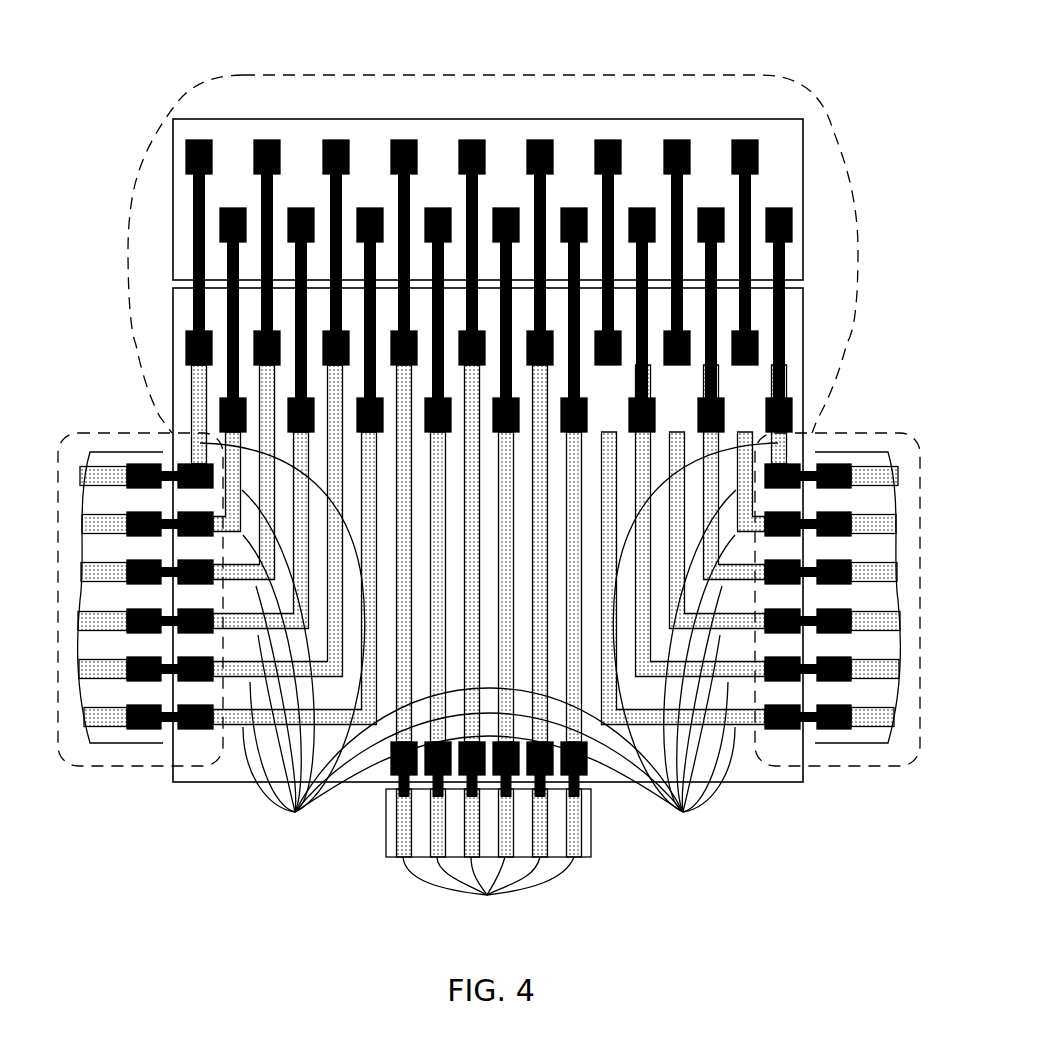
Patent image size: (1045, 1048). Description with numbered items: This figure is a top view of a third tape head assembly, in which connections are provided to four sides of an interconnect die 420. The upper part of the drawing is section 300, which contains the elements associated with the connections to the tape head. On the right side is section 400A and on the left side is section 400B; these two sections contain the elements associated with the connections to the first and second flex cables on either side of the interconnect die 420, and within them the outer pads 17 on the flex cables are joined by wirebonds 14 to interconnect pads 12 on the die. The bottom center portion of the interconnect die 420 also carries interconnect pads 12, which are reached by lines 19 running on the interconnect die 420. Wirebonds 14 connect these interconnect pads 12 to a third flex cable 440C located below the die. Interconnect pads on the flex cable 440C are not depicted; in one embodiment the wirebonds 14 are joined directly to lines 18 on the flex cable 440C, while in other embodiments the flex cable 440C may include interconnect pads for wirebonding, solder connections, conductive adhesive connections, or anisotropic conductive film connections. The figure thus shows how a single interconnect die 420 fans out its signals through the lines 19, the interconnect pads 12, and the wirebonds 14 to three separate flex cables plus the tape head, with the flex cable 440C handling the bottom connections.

The section 300 is at (771, 78).
The section 400A is at (863, 433).
The section 400B is at (66, 433).
The interconnect die 420 is at (756, 783).
The flex cable 440C is at (598, 855).
The interconnect pads 12 is at (181, 700).
The wirebonds 14 is at (167, 680).
The terminal pad 17 is at (125, 703).
The lines 19 is at (489, 641).
The lines 18 is at (488, 888).